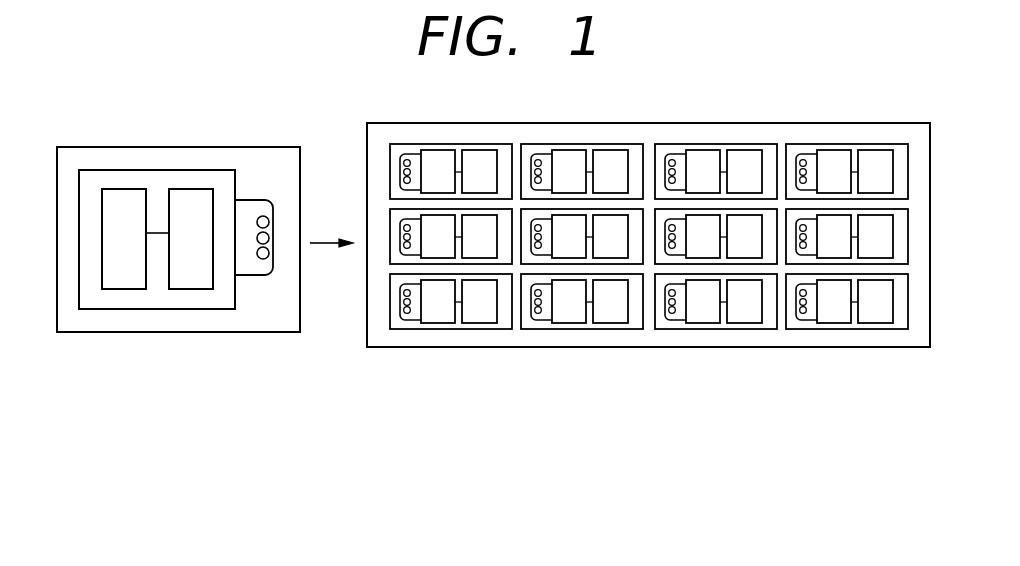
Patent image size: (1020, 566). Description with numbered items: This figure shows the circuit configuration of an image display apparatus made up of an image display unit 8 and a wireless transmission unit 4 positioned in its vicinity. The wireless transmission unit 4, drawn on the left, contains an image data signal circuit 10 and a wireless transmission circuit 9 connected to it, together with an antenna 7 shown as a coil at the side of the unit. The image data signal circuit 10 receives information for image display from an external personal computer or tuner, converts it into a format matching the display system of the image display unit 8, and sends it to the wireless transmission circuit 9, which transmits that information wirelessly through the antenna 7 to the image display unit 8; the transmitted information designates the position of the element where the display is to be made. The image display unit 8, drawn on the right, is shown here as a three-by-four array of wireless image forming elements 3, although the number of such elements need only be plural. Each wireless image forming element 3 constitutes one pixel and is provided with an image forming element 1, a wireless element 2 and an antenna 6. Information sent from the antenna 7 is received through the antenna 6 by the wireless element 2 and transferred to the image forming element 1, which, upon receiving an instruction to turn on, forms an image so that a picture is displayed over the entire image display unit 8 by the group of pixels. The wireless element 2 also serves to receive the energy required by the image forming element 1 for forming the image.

The image forming element 1 is at (482, 313).
The wireless element 2 is at (436, 313).
The wireless image forming element 3 is at (508, 330).
The wireless transmission unit 4 is at (158, 333).
The antenna 6 is at (403, 316).
The antenna 7 is at (260, 283).
The image display unit 8 is at (730, 348).
The wireless transmission circuit 9 is at (196, 207).
The image data signal circuit 10 is at (122, 207).